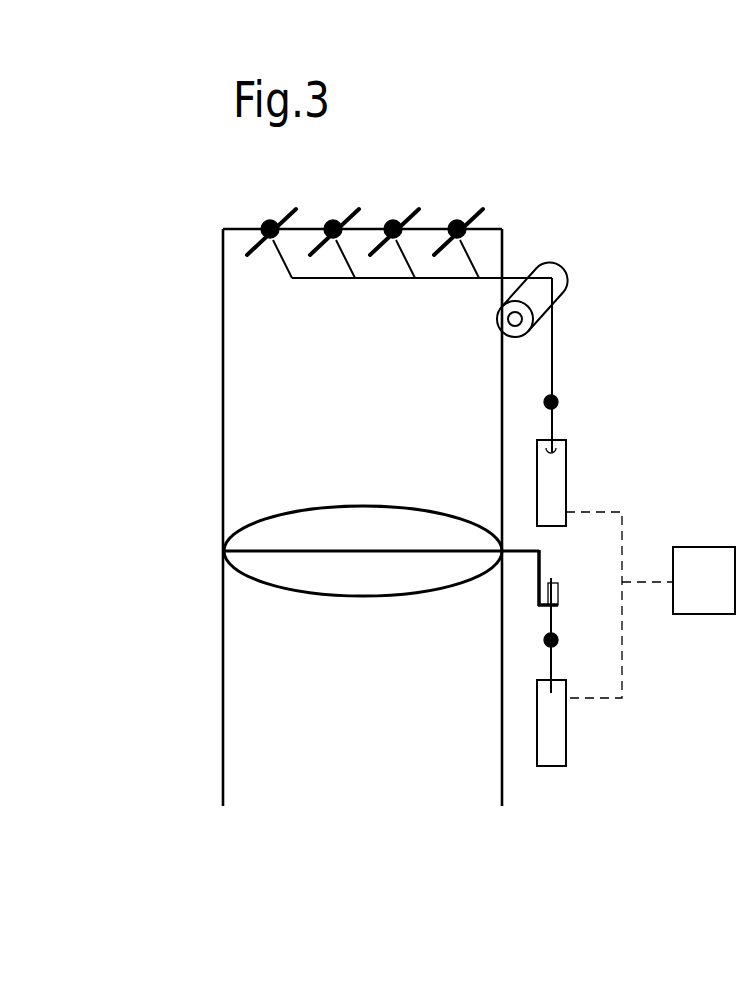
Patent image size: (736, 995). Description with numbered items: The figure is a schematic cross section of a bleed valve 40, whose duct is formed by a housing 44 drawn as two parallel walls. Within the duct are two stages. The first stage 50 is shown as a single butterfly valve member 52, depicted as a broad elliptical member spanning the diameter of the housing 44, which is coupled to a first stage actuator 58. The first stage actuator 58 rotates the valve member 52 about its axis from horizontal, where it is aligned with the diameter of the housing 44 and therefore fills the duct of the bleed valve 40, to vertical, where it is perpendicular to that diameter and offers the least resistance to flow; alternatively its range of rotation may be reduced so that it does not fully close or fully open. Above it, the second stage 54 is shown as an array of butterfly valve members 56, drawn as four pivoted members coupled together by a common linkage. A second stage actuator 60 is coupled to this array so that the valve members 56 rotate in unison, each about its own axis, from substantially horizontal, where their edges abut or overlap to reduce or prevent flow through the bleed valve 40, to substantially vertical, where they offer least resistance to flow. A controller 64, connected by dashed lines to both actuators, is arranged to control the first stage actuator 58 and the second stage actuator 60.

The bleed valve 40 is at (170, 428).
The housing 44 is at (222, 703).
The first stage 50 is at (200, 563).
The valve member 52 is at (378, 598).
The second stage 54 is at (212, 232).
The valve members 56 is at (393, 221).
The first stage actuator 58 is at (548, 718).
The second stage actuator 60 is at (556, 452).
The controller 64 is at (650, 605).